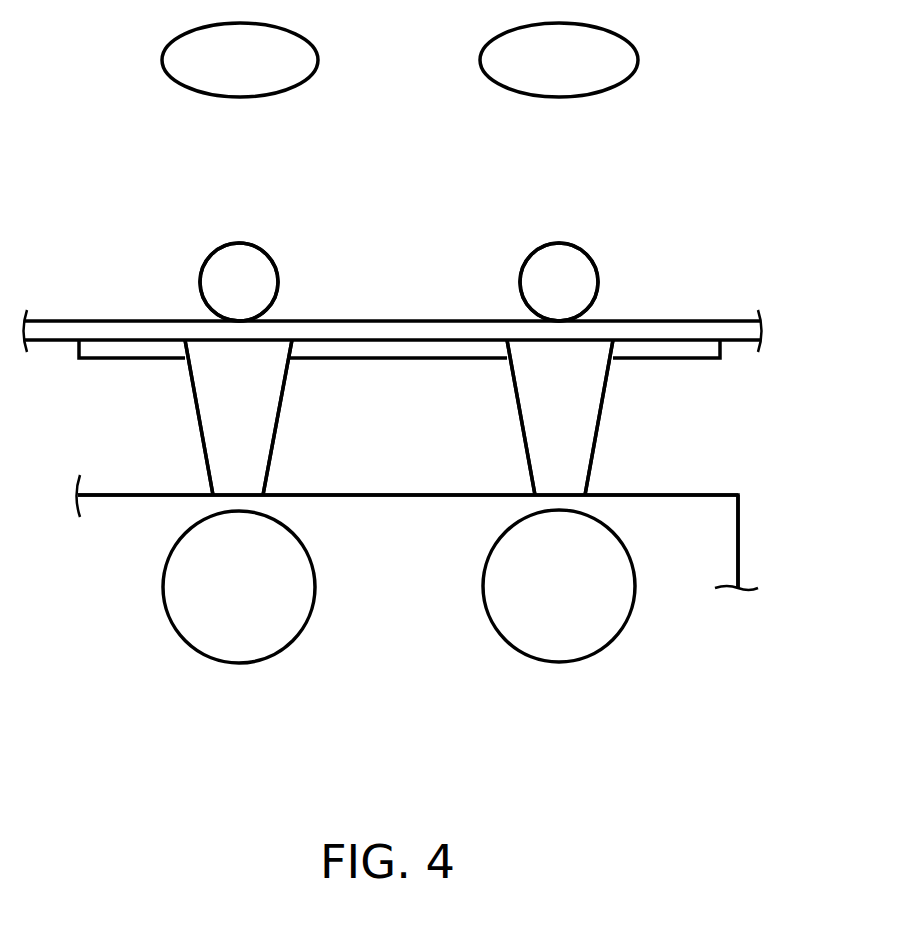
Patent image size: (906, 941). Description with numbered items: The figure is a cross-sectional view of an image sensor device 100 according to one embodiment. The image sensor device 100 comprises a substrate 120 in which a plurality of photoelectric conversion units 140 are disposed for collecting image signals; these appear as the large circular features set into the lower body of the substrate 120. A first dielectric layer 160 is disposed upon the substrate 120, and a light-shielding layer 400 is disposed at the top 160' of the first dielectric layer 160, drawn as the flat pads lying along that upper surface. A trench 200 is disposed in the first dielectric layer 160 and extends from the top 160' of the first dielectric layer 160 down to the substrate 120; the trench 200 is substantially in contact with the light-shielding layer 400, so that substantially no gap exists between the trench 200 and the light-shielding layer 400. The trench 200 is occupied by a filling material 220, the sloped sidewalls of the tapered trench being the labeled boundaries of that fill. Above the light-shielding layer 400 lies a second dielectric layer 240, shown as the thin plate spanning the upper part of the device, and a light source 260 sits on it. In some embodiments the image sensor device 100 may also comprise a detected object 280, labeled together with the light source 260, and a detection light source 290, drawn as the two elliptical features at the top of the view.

The image sensor device 100 is at (54, 207).
The substrate 120 is at (725, 540).
The photoelectric conversion units 140 is at (240, 648).
The first dielectric layer 160 is at (440, 515).
The top of the first dielectric layer 160' is at (442, 420).
The trench 200 is at (272, 452).
The filling material 220 is at (212, 462).
The second dielectric layer 240 is at (740, 330).
The light source 260 is at (588, 281).
The detected object 280 is at (399, 282).
The detection light source 290 is at (163, 60).
The light-shielding layer 400 is at (134, 350).